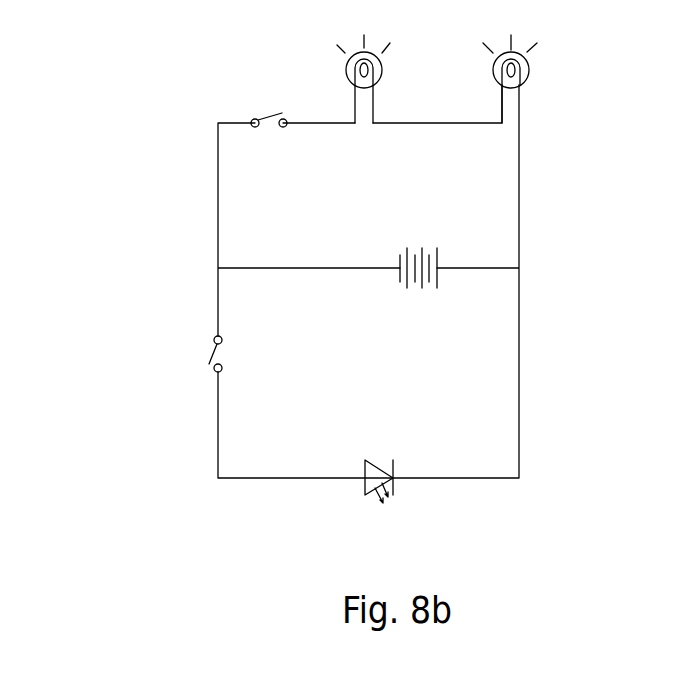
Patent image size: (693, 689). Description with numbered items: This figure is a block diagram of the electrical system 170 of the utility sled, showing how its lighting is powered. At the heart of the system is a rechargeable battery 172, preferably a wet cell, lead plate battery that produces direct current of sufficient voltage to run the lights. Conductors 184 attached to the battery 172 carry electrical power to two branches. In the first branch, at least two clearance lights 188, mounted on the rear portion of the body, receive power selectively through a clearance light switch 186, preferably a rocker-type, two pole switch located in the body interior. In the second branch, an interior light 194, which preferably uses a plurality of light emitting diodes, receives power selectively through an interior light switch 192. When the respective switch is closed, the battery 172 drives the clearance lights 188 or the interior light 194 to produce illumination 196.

The electrical system 170 is at (548, 201).
The rechargeable battery 172 is at (407, 248).
The conductors 184 is at (217, 210).
The clearance light switch 186 is at (267, 115).
The clearance lights 188 is at (345, 68).
The interior light switch 192 is at (208, 352).
The interior light 194 is at (365, 462).
The illumination 196 is at (364, 35).